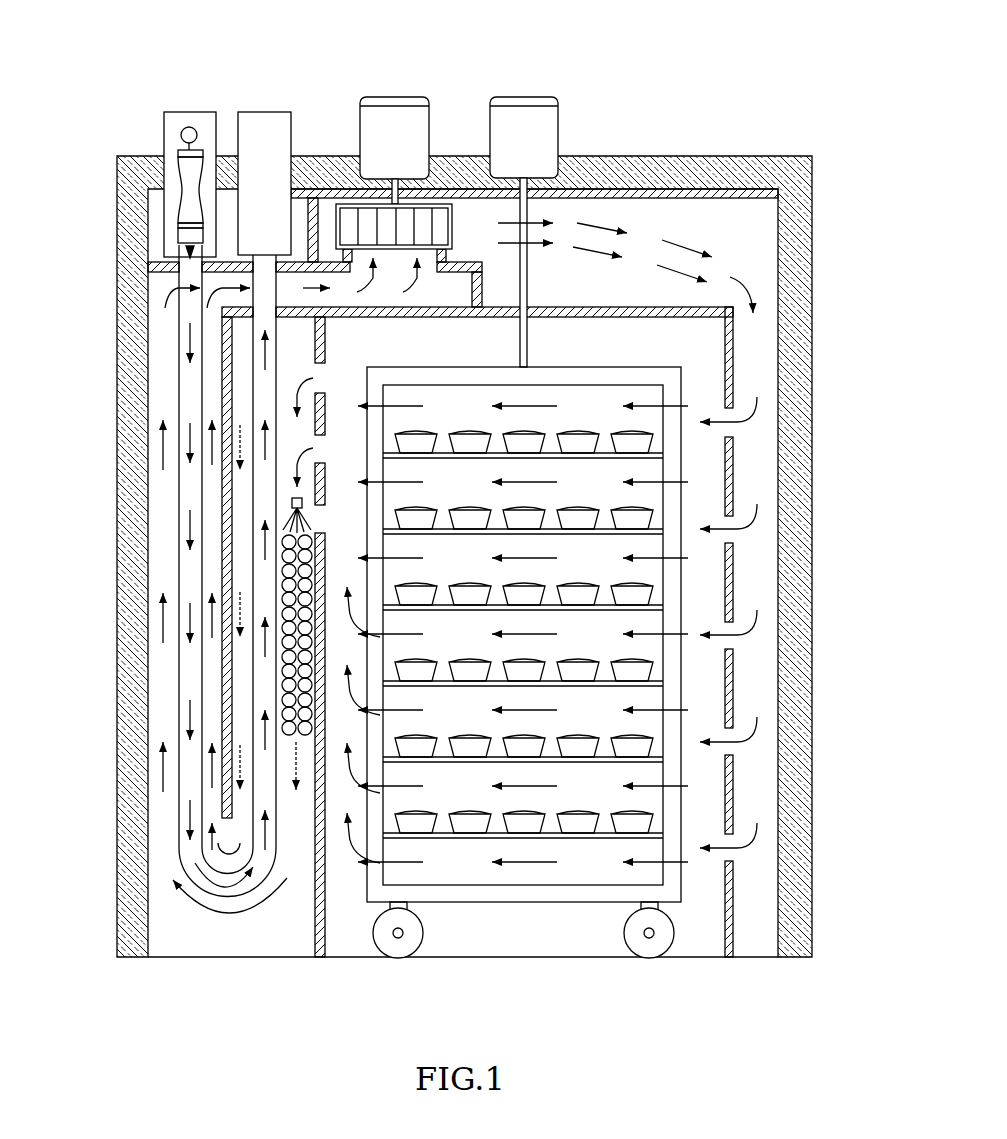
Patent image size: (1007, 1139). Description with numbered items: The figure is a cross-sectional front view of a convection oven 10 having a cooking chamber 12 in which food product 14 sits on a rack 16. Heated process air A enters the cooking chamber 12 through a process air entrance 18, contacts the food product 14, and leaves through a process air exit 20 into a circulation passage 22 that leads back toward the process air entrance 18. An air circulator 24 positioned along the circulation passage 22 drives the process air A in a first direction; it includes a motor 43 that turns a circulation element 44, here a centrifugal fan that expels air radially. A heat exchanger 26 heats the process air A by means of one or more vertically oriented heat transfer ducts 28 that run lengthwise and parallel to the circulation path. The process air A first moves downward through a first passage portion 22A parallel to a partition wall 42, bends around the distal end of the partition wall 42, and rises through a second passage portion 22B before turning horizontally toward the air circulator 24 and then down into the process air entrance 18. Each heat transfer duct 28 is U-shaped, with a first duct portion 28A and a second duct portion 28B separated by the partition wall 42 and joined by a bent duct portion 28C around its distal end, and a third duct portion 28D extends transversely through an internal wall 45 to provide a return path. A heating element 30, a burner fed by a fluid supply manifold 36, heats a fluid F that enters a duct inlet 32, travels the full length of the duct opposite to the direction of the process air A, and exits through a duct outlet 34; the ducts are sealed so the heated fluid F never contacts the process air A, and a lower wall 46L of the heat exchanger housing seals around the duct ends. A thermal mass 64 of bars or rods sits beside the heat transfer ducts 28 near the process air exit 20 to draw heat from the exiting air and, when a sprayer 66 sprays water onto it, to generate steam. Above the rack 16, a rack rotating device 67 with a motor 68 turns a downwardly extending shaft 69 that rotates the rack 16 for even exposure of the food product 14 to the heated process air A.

The convection oven 10 is at (737, 73).
The cooking chamber 12 is at (705, 690).
The food product 14 is at (663, 520).
The rack 16 is at (678, 905).
The process air entrance 18 is at (736, 427).
The process air exit 20 is at (330, 378).
The circulation passage 22 is at (713, 213).
The first passage portion 22A is at (242, 550).
The second passage portion 22B is at (165, 673).
The air circulator 24 is at (379, 93).
The heat exchanger 26 is at (163, 168).
The heat transfer duct 28 is at (180, 415).
The first duct portion 28A is at (180, 487).
The second duct portion 28B is at (253, 573).
The bent duct portion 28C is at (210, 888).
The third duct portion 28D is at (200, 315).
The heating element 30 is at (177, 203).
The duct inlet 32 is at (178, 249).
The duct outlet 34 is at (255, 200).
The fluid supply manifold 36 is at (200, 113).
The partition wall 42 is at (213, 698).
The motor 43 is at (407, 97).
The circulation element 44 is at (437, 200).
The internal wall 45 is at (297, 305).
The lower wall 46L is at (163, 303).
The thermal mass 64 is at (287, 660).
The sprayer 66 is at (290, 503).
The rack rotating device 67 is at (534, 80).
The motor 68 is at (558, 98).
The shaft 69 is at (528, 240).
The process air A is at (703, 243).
The heated fluid F is at (190, 382).